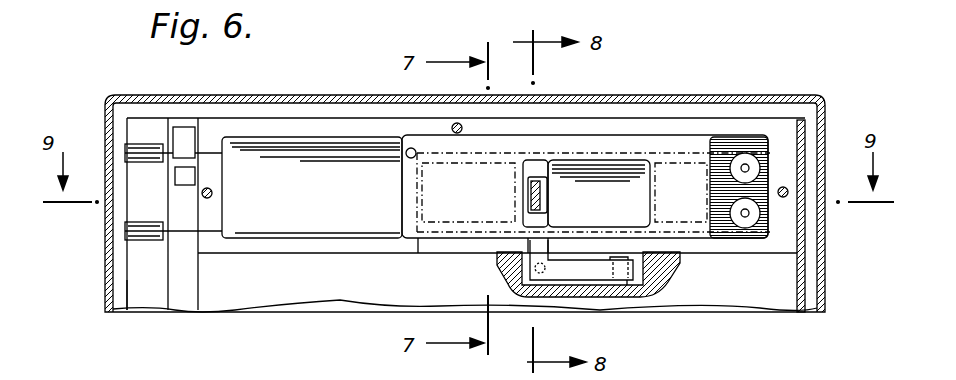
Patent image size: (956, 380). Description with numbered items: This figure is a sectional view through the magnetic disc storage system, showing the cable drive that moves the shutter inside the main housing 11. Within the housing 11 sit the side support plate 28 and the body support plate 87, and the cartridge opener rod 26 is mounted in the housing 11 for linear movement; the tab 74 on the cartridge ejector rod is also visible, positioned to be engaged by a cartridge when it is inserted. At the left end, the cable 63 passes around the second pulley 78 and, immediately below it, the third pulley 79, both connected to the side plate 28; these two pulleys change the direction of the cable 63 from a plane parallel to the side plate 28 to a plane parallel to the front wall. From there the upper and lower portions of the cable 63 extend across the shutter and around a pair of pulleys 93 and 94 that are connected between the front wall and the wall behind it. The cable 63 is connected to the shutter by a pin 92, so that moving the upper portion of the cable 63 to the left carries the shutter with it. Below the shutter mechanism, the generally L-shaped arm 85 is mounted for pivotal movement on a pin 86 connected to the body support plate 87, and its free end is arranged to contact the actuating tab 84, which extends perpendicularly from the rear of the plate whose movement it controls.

The main housing 11 is at (704, 97).
The cartridge opener rod 26 is at (175, 178).
The side support plate 28 is at (140, 291).
The cable 63 is at (293, 228).
The tab 74 is at (185, 127).
The second pulley 78 is at (137, 147).
The third pulley 79 is at (125, 232).
The actuating tab 84 is at (542, 197).
The L-shaped arm 85 is at (593, 272).
The pin 86 is at (656, 287).
The body support plate 87 is at (347, 297).
The pin 92 is at (409, 148).
The pulley 93 is at (747, 165).
The pulley 94 is at (750, 213).